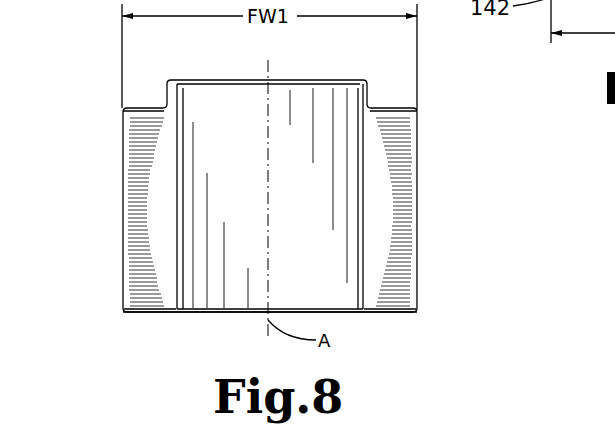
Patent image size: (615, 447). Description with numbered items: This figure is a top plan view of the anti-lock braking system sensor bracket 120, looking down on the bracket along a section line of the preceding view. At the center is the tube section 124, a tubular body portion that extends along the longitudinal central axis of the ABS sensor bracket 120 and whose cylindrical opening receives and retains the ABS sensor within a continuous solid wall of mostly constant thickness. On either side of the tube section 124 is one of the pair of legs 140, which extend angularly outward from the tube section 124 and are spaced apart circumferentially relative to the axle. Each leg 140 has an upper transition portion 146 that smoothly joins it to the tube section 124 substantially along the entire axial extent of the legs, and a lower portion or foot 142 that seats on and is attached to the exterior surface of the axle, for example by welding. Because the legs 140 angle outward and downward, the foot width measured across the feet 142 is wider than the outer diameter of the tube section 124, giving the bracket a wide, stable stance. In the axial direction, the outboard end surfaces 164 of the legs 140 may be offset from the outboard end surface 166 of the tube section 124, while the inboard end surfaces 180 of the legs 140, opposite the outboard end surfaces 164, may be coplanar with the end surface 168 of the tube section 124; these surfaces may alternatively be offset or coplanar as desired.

The ABS sensor bracket 120 is at (503, 240).
The tube section 124 is at (243, 110).
The legs 140 is at (152, 302).
The foot 142 is at (127, 195).
The upper transition portion 146 is at (173, 134).
The outboard end surfaces 164 is at (143, 107).
The outboard end surface 166 is at (287, 80).
The end surface 168 is at (203, 314).
The inboard end surfaces 180 is at (155, 313).